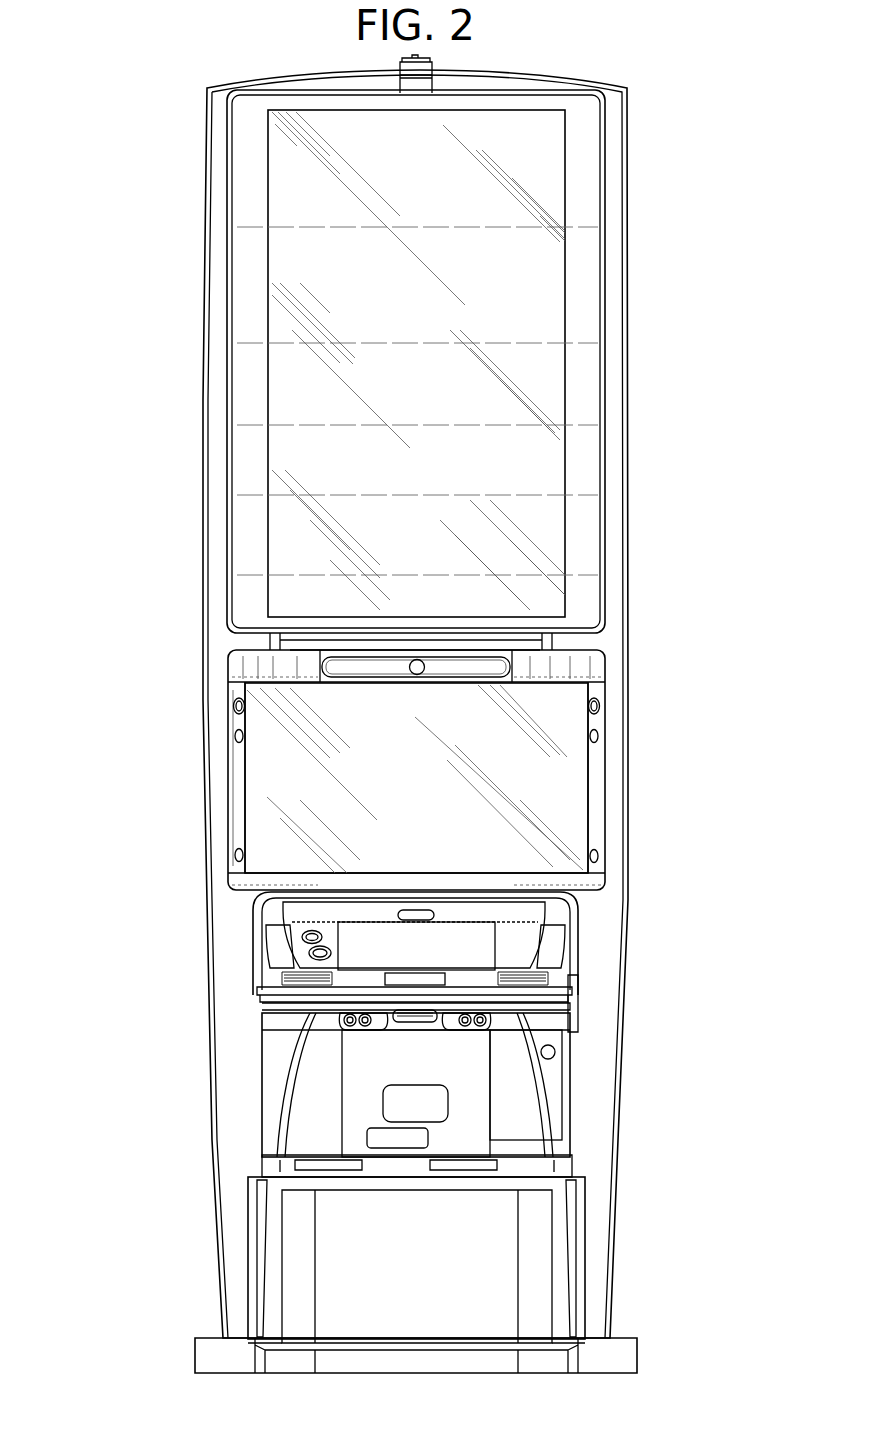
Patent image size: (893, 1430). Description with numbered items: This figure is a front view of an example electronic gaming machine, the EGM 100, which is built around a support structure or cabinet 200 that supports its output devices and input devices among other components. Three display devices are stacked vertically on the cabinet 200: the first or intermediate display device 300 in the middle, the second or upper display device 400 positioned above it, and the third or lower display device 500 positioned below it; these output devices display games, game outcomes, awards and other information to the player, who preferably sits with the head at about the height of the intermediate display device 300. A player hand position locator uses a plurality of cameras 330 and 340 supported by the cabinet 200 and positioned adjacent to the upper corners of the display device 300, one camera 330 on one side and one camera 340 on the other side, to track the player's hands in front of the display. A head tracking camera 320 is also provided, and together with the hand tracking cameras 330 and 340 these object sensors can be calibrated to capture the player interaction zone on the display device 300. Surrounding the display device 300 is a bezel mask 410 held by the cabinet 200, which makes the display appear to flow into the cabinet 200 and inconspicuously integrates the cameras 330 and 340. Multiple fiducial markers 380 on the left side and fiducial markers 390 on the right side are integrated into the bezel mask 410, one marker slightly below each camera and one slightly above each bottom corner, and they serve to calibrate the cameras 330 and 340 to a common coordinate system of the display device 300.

The EGM 100 is at (137, 442).
The cabinet 200 is at (630, 498).
The first or intermediate display device 300 is at (525, 770).
The head tracking camera 320 is at (410, 664).
The camera 330 is at (233, 707).
The camera 340 is at (600, 707).
The fiducial markers 380 is at (234, 737).
The fiducial markers 390 is at (599, 737).
The second or upper display device 400 is at (505, 298).
The bezel mask 410 is at (233, 797).
The third or lower display device 500 is at (413, 972).